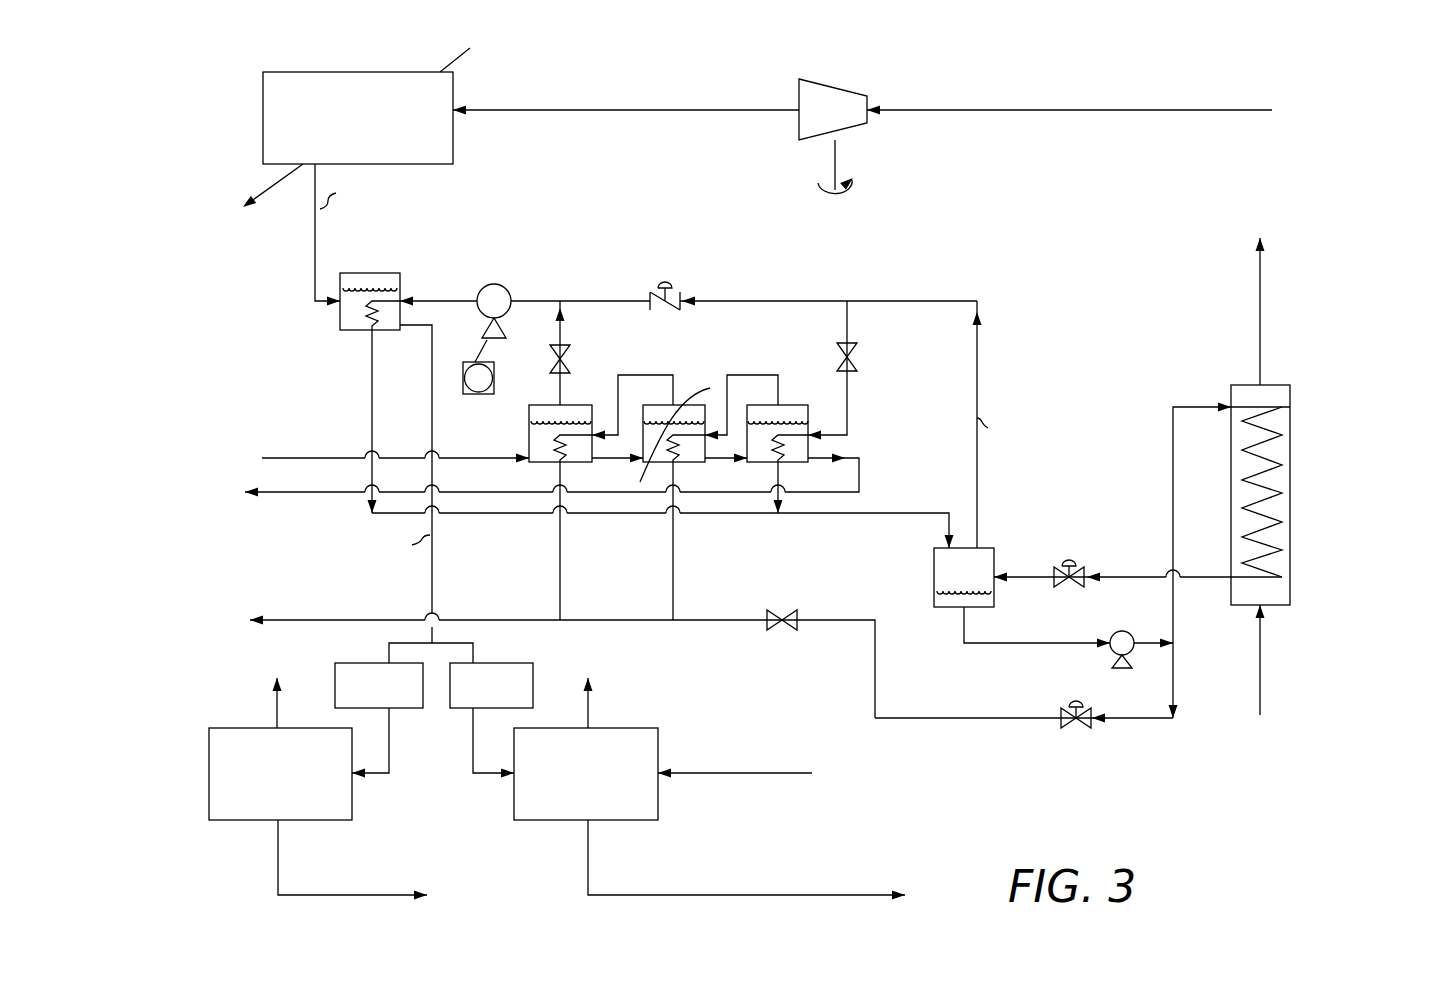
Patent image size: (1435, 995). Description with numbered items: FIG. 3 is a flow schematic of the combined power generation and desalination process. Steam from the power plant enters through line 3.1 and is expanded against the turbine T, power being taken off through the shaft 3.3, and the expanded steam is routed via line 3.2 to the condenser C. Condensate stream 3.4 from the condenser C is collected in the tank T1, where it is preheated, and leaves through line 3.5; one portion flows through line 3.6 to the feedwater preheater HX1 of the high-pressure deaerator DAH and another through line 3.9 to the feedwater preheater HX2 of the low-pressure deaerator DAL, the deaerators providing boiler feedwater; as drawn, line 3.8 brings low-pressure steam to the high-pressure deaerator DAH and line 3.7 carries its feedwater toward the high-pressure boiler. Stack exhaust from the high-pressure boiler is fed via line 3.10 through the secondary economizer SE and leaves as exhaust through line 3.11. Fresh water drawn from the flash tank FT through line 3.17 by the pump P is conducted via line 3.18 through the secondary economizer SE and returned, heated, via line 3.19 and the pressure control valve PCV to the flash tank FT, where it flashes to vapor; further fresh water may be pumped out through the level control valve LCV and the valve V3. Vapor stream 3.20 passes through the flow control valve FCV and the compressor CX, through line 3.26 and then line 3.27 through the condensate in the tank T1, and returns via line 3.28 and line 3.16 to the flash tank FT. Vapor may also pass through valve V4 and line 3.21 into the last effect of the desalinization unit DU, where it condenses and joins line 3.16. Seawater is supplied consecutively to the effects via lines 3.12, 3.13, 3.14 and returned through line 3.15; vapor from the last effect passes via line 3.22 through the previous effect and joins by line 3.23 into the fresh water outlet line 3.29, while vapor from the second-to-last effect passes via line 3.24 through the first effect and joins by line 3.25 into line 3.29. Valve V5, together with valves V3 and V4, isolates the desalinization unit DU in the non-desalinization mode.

The steam from power plant 3.1 is at (1136, 108).
The line 3.2 is at (626, 101).
The turbine shaft power output 3.3 is at (837, 195).
The condensate stream 3.4 is at (386, 235).
The line 3.5 is at (386, 484).
The line 3.6 is at (493, 754).
The feedwater to H.P. boiler 3.7 is at (746, 870).
The L.P. steam 3.8 is at (765, 769).
The line 3.9 is at (370, 754).
The line 3.10 is at (1262, 718).
The exhaust 3.11 is at (1259, 299).
The line 3.12 is at (367, 459).
The line 3.13 is at (617, 467).
The line 3.14 is at (725, 467).
The line 3.15 is at (574, 484).
The condensate line 3.16 is at (663, 519).
The line 3.17 is at (1037, 627).
The line 3.18 is at (1179, 561).
The heated fresh water stream 3.19 is at (1138, 569).
The water vapor stream 3.20 is at (1010, 424).
The line 3.21 is at (798, 487).
The line 3.22 is at (741, 396).
The line 3.23 is at (697, 541).
The line 3.24 is at (632, 396).
The line 3.25 is at (583, 541).
The line 3.26 is at (580, 290).
The line 3.27 is at (438, 293).
The line 3.28 is at (351, 421).
The fresh water outlet line 3.29 is at (531, 657).
The condenser C is at (330, 58).
The turbine T is at (860, 90).
The tank T1 is at (362, 273).
The compressor CX is at (500, 316).
The flow control valve FCV is at (811, 284).
The blocking valve V5 is at (568, 357).
The valve V4 is at (856, 349).
The control valve V3 is at (781, 611).
The multi-effect desalinization unit DU is at (743, 340).
The flash tank FT is at (932, 573).
The pressure control valve PCV is at (1067, 560).
The pump P is at (1138, 633).
The level control valve LCV is at (1024, 726).
The secondary economizer SE is at (1279, 500).
The feedwater preheater HX2 is at (404, 675).
The feedwater preheater HX1 is at (491, 685).
The low-pressure deaerator DAL is at (322, 788).
The high-pressure deaerator DAH is at (586, 738).